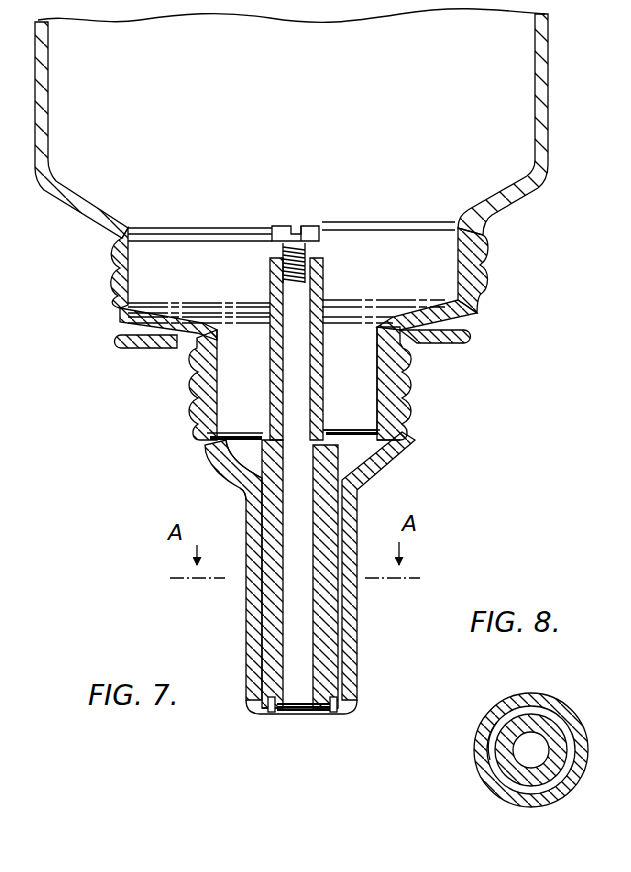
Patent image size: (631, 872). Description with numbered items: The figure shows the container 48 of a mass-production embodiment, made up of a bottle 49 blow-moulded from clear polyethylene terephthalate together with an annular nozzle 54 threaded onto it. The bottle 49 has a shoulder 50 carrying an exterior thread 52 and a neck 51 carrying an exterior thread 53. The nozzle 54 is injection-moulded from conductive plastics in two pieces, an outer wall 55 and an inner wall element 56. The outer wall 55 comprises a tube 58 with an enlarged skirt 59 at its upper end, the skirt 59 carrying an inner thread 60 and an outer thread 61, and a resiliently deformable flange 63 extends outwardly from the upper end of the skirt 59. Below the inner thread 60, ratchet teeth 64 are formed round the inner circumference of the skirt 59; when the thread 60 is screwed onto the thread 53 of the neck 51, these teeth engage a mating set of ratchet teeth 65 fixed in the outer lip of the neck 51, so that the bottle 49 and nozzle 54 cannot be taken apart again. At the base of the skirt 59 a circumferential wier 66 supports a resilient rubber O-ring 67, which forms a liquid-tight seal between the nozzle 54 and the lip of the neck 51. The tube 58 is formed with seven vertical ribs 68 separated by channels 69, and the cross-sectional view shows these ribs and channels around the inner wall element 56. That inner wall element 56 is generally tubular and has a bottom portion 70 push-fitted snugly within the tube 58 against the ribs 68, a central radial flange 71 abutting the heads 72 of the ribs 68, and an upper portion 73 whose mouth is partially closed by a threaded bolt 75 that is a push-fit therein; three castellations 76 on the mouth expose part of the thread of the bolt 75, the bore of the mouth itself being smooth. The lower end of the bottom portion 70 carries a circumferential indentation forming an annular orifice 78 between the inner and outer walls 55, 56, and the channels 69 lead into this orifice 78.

In FIG. 7, the container 48 is at (500, 217).
In FIG. 7, the bottle 49 is at (48, 96).
In FIG. 7, the shoulder 50 is at (490, 305).
In FIG. 7, the neck 51 is at (235, 323).
In FIG. 7, the exterior thread 52 is at (485, 290).
In FIG. 7, the exterior thread 53 is at (417, 371).
In FIG. 7, the annular nozzle 54 is at (241, 635).
In FIG. 7, the outer wall 55 is at (405, 448).
In FIG. 7, the inner wall element 56 is at (333, 271).
In FIG. 7, the tube 58 is at (243, 573).
In FIG. 8, the tube 58 is at (506, 802).
In FIG. 7, the skirt 59 is at (192, 382).
In FIG. 7, the inner thread 60 is at (409, 398).
In FIG. 7, the outer thread 61 is at (412, 388).
In FIG. 7, the resiliently deformable flange 63 is at (115, 353).
In FIG. 7, the ratchet teeth 64 is at (412, 425).
In FIG. 7, the ratchet teeth 65 is at (203, 428).
In FIG. 7, the circumferential wier 66 is at (215, 474).
In FIG. 7, the O-ring 67 is at (210, 445).
In FIG. 7, the vertical ribs 68 is at (257, 603).
In FIG. 8, the vertical ribs 68 is at (537, 703).
In FIG. 7, the channels 69 is at (344, 633).
In FIG. 8, the channels 69 is at (485, 770).
In FIG. 7, the bottom portion 70 is at (320, 665).
In FIG. 8, the bottom portion 70 is at (490, 791).
In FIG. 7, the central radial flange 71 is at (343, 430).
In FIG. 7, the heads 72 is at (237, 488).
In FIG. 7, the upper portion 73 is at (334, 376).
In FIG. 7, the threaded bolt 75 is at (290, 227).
In FIG. 7, the castellations 76 is at (320, 243).
In FIG. 7, the annular orifice 78 is at (270, 713).